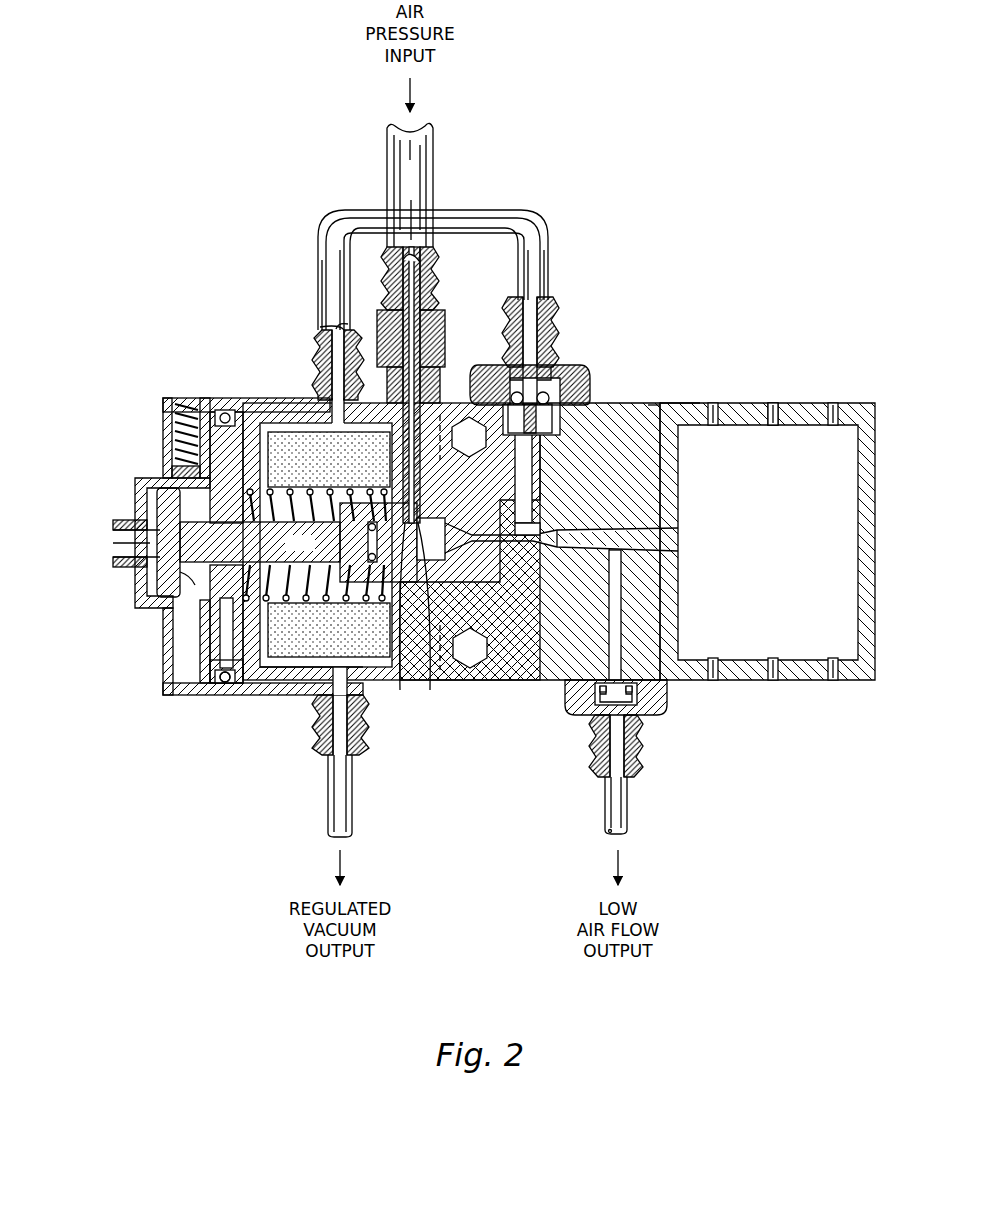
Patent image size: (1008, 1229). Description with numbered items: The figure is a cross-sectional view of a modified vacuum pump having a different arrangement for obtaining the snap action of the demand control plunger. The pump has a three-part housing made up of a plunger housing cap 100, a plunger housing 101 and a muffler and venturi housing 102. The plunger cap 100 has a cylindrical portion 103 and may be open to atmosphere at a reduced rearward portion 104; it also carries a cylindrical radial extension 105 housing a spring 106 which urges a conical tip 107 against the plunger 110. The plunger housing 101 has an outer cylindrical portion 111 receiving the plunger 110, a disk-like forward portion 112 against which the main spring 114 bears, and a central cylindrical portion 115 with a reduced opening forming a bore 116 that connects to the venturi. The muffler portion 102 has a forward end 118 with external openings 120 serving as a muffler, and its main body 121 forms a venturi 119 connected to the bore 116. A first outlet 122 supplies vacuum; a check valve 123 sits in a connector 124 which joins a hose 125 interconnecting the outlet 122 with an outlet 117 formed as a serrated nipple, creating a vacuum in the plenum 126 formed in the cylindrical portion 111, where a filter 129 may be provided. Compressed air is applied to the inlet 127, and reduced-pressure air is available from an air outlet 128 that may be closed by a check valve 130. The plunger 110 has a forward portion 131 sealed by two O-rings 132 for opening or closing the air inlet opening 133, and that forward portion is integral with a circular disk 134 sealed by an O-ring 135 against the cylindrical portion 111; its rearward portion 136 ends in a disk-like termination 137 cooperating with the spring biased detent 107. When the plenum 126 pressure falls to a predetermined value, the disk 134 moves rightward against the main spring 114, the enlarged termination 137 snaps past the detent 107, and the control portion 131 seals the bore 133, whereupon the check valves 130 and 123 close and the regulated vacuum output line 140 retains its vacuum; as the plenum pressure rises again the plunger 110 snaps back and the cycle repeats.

The plunger housing cap 100 is at (152, 640).
The plunger housing 101 is at (297, 388).
The muffler and venturi housing 102 is at (694, 390).
The cylindrical portion 103 is at (130, 478).
The reduced rearward portion 104 is at (113, 521).
The cylindrical radial extension 105 is at (163, 408).
The spring 106 is at (178, 398).
The conical tip 107 is at (170, 466).
The plunger 110 is at (316, 552).
The outer cylindrical portion 111 is at (299, 670).
The disk-like forward portion 112 is at (383, 404).
The main spring 114 is at (252, 490).
The central cylindrical portion 115 is at (476, 532).
The bore 116 is at (476, 549).
The outlet 117 is at (318, 348).
The forward end 118 is at (858, 404).
The venturi 119 is at (677, 543).
The external openings 120 is at (772, 403).
The main body 121 is at (652, 404).
The first outlet 122 is at (537, 447).
The check valve 123 is at (560, 370).
The connector 124 is at (512, 376).
The hose 125 is at (317, 256).
The plenum 126 is at (272, 623).
The inlet 127 is at (443, 334).
The air outlet 128 is at (636, 757).
The filter 129 is at (334, 462).
The check valve 130 is at (634, 705).
The forward portion 131 is at (431, 692).
The O-rings 132 is at (399, 692).
The air inlet opening 133 is at (421, 258).
The circular disk 134 is at (256, 684).
The O-ring 135 is at (226, 684).
The rearward portion 136 is at (145, 588).
The disk-like termination 137 is at (113, 543).
The regulated vacuum output line 140 is at (352, 799).